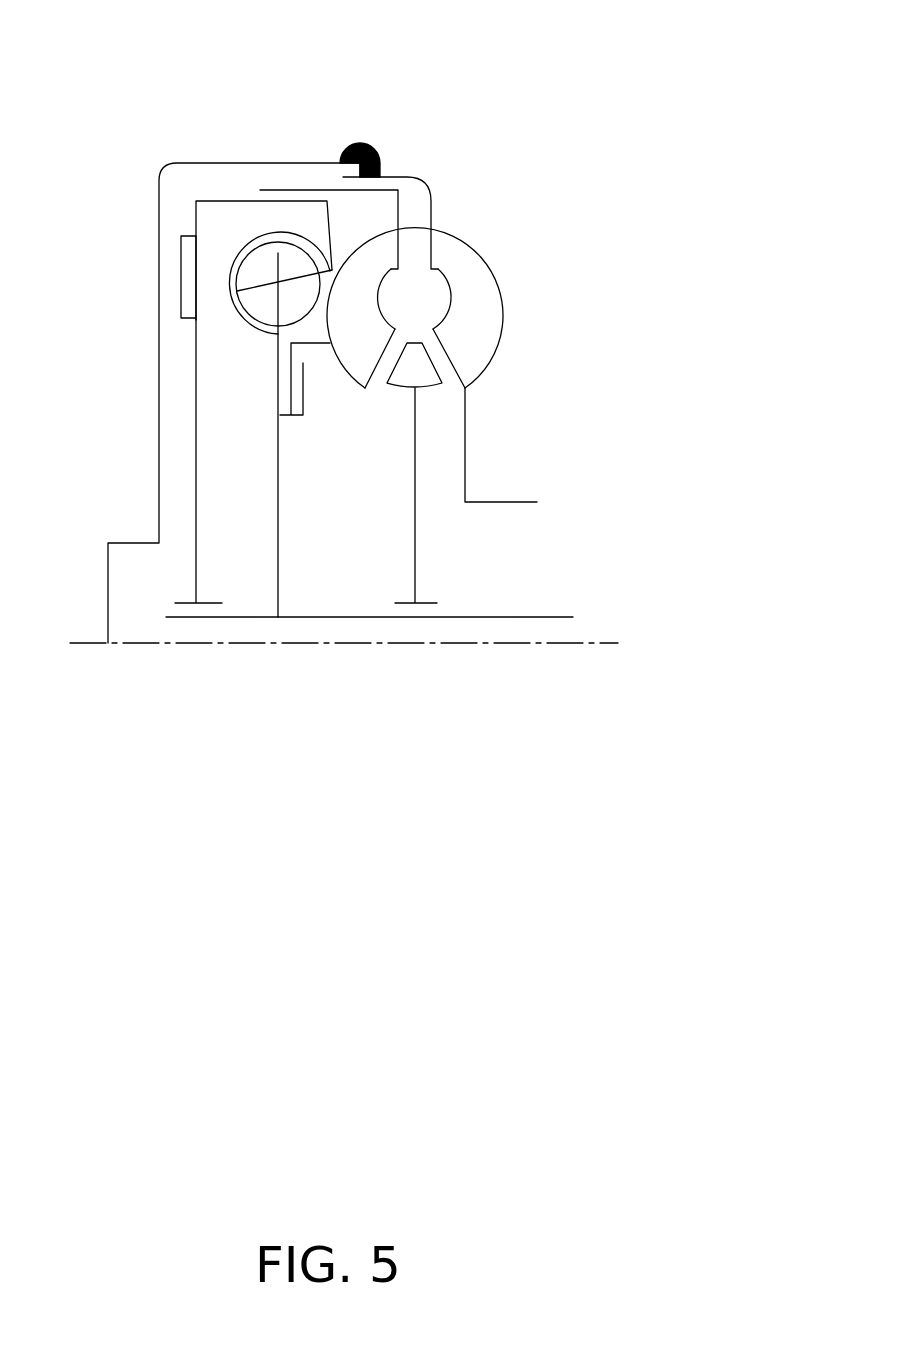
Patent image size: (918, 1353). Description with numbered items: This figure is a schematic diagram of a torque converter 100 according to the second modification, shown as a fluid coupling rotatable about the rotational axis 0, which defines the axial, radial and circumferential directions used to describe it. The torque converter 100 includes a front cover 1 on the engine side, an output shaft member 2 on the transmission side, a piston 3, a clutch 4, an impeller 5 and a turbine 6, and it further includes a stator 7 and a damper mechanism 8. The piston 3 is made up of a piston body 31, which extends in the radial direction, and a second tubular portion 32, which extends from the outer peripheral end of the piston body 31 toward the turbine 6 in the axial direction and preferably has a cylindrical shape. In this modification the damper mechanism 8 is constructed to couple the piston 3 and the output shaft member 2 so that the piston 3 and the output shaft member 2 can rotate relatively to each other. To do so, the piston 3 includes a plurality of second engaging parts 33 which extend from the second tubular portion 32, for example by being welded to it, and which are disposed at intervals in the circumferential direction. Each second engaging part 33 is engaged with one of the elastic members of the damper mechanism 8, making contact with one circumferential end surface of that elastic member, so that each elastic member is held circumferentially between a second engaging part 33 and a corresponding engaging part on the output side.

The torque converter 100 is at (455, 85).
The front cover 1 is at (155, 268).
The output shaft member 2 is at (318, 616).
The piston 3 is at (188, 396).
The piston body 31 is at (196, 448).
The second tubular portion 32 is at (229, 201).
The second engaging part 33 is at (257, 290).
The clutch 4 is at (184, 233).
The impeller 5 is at (508, 283).
The turbine 6 is at (343, 367).
The stator 7 is at (405, 387).
The damper mechanism 8 is at (297, 222).
The rotational axis 0 is at (593, 644).